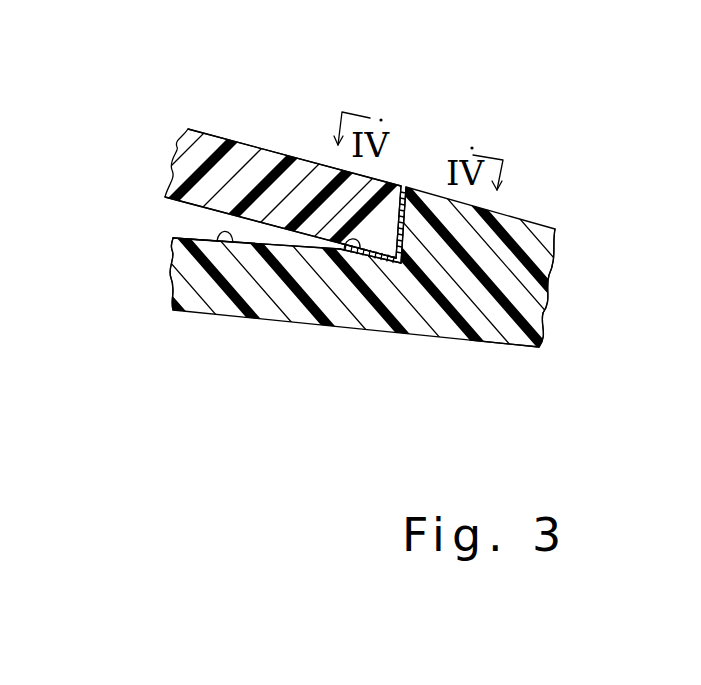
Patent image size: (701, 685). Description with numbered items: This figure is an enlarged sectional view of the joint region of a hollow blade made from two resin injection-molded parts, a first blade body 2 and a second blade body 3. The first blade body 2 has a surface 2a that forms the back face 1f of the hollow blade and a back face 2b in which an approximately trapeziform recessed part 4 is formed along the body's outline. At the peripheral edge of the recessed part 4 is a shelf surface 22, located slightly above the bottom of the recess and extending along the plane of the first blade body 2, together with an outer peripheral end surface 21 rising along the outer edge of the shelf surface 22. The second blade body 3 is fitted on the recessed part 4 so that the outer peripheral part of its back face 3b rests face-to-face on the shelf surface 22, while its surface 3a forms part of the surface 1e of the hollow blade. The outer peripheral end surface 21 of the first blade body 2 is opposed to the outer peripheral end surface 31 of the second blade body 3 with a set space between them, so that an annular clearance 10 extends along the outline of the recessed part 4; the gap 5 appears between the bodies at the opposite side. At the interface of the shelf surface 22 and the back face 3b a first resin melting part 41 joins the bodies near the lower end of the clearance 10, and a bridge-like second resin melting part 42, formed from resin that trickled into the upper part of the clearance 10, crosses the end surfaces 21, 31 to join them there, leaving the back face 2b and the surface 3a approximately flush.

The second blade body 3 is at (200, 126).
The surface of the second blade body 3a is at (246, 128).
The back face of the second blade body 3b is at (178, 206).
The outer peripheral end surface 21 is at (398, 226).
The second resin melting part 42 is at (420, 188).
The surface of the hollow blade 1e is at (541, 226).
The gap 5 is at (197, 220).
The back face of the first blade body 2b is at (183, 233).
The surface of the first blade body 2a is at (186, 314).
The first blade body 2 is at (228, 322).
The recessed part 4 is at (230, 243).
The shelf surface 22 is at (343, 252).
The first resin melting part 41 is at (395, 265).
The outer peripheral end surface of the second blade body 31 is at (406, 225).
The annular clearance 10 is at (488, 343).
The back face of the hollow blade 1f is at (533, 350).